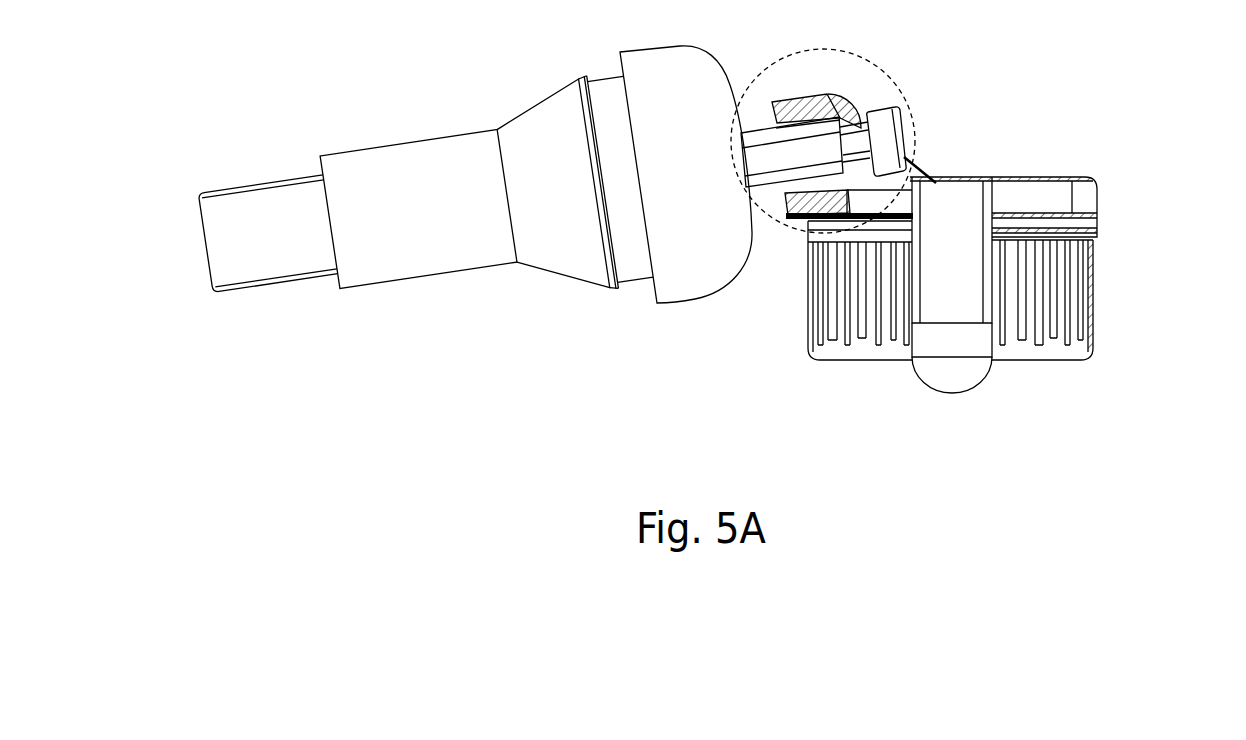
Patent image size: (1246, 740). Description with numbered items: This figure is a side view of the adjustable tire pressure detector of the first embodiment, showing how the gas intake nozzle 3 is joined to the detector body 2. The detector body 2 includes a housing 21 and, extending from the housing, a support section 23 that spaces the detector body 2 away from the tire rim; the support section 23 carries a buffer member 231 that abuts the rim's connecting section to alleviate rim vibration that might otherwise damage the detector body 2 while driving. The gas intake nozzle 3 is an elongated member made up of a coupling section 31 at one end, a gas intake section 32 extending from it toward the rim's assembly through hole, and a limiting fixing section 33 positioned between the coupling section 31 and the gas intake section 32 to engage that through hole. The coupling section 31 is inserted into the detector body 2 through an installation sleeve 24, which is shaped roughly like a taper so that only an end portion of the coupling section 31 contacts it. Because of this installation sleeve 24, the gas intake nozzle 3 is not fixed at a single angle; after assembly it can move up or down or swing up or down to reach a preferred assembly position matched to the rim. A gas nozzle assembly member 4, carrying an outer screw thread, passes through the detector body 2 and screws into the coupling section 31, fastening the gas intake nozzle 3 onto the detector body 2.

The detector body 2 is at (1004, 290).
The housing 21 is at (1057, 187).
The support section 23 is at (1034, 332).
The buffer member 231 is at (955, 374).
The installation sleeve 24 is at (831, 99).
The gas intake nozzle 3 is at (340, 147).
The coupling section 31 is at (760, 130).
The gas intake section 32 is at (418, 152).
The limiting fixing section 33 is at (630, 258).
The gas nozzle assembly member 4 is at (914, 119).